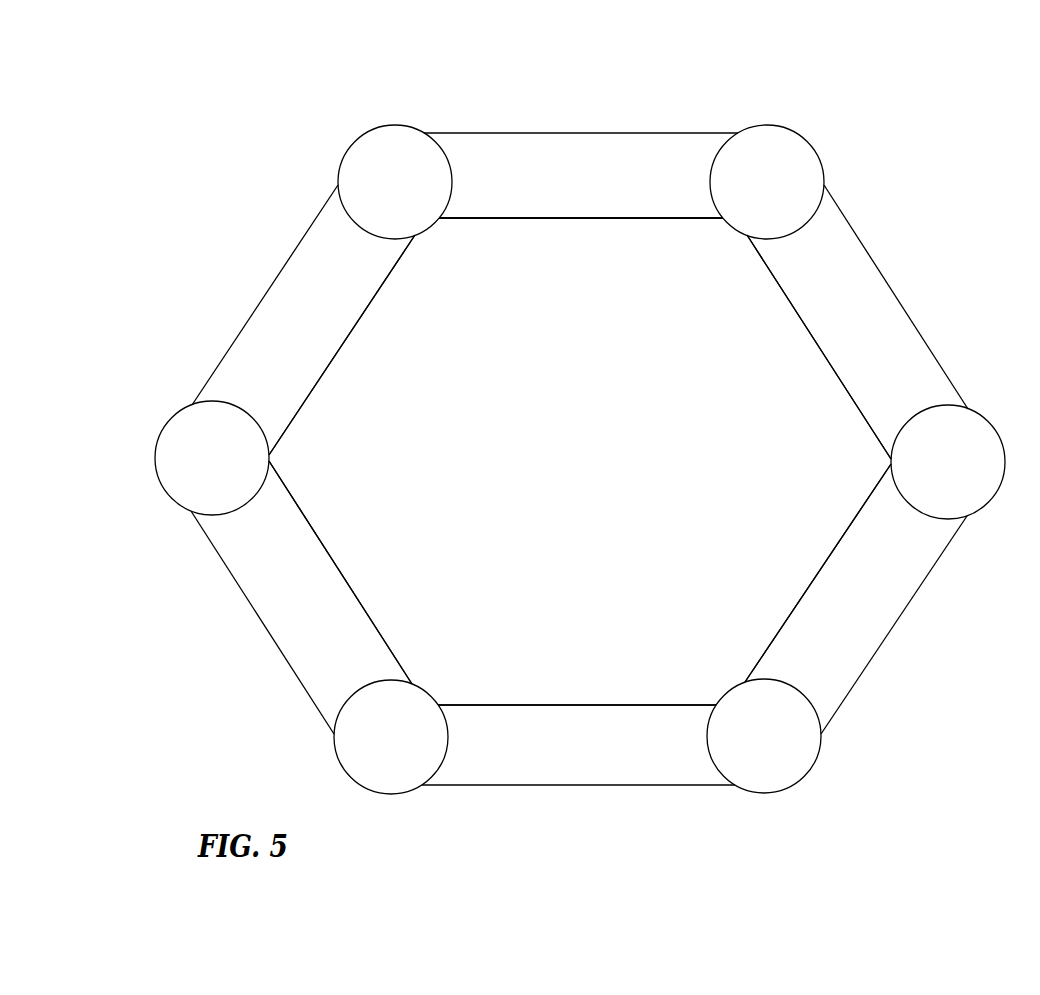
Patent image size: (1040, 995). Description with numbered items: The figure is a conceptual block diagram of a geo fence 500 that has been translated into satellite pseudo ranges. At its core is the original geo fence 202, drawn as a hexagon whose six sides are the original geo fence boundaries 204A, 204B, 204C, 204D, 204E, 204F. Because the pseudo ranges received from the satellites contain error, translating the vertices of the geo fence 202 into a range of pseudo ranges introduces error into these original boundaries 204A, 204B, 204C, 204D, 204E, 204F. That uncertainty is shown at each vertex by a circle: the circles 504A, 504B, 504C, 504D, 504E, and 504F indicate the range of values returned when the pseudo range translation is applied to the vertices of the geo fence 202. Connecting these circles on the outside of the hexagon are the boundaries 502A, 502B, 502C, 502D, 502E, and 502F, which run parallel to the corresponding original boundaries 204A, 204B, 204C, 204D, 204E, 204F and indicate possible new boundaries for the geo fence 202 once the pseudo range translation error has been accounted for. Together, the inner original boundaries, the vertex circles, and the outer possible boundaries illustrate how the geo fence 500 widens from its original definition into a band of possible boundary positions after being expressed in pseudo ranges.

The geo fence 500 is at (102, 100).
The original geo fence 202 is at (649, 240).
The circle 504A is at (393, 157).
The boundary 502A is at (511, 138).
The geo fence boundary 204A is at (591, 220).
The circle 504B is at (248, 448).
The boundary 502B is at (271, 278).
The geo fence boundary 204B is at (338, 355).
The circle 504C is at (421, 717).
The boundary 502C is at (278, 646).
The geo fence boundary 204C is at (366, 618).
The circle 504D is at (739, 710).
The boundary 502D is at (516, 785).
The geo fence boundary 204D is at (586, 707).
The circle 504E is at (911, 452).
The boundary 502E is at (864, 678).
The geo fence boundary 204E is at (831, 568).
The circle 504F is at (778, 157).
The boundary 502F is at (883, 282).
The geo fence boundary 204F is at (836, 377).